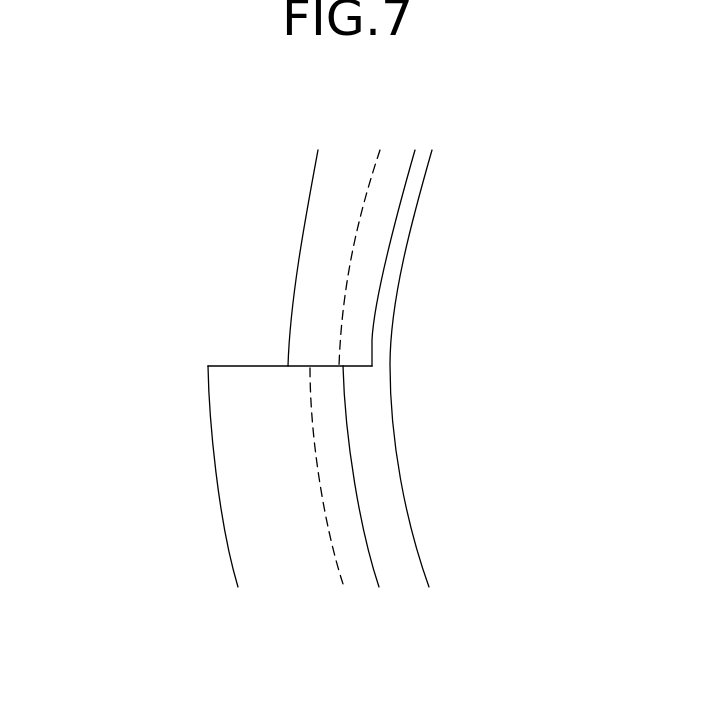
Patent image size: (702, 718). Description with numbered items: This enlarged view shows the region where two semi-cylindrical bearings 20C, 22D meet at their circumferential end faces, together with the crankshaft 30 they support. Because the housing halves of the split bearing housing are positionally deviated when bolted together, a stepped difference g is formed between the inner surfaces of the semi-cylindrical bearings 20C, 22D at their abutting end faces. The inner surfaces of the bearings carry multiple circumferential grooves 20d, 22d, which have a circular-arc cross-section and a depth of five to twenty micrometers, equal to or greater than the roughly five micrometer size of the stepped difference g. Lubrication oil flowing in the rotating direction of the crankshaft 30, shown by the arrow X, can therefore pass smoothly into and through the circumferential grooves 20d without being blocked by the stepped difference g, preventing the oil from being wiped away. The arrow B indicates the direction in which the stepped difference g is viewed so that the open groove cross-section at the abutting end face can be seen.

The semi-cylindrical bearing 20C is at (305, 261).
The circumferential grooves 20d is at (374, 208).
The crankshaft 30 is at (447, 236).
The semi-cylindrical bearing 22D is at (231, 497).
The circumferential grooves 22d is at (320, 445).
The stepped difference g is at (372, 366).
The arrow indicating rotating direction of the crankshaft X is at (426, 352).
The arrow indicating viewing direction B is at (372, 437).